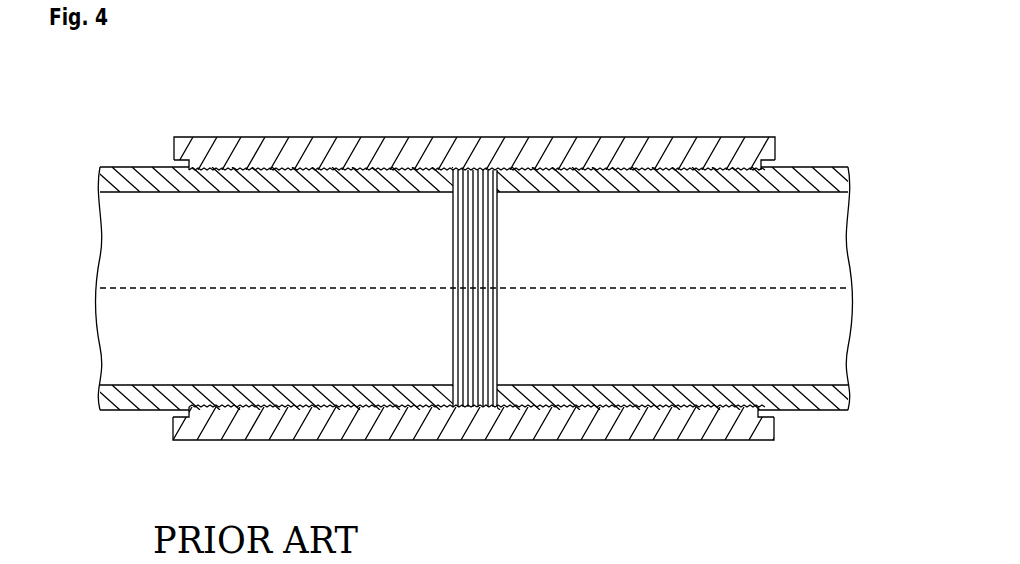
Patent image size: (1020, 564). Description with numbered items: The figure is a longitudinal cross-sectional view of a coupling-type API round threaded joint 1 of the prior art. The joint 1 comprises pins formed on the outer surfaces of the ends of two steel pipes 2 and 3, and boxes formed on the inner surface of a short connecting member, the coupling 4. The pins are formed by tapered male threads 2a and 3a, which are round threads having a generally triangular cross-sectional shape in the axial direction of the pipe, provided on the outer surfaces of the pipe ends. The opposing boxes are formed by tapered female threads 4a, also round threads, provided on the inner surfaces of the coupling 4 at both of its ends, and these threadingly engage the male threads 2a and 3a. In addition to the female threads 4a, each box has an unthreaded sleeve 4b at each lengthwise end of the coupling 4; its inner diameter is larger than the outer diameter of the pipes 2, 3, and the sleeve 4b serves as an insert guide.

The coupling-type round threaded joint 1 is at (620, 113).
The steel pipe 2 is at (135, 160).
The steel pipe 3 is at (806, 162).
The coupling 4 is at (183, 131).
The tapered male thread 2a is at (317, 174).
The tapered male thread 3a is at (680, 176).
The tapered female thread 4a is at (380, 163).
The unthreaded sleeve 4b is at (187, 166).